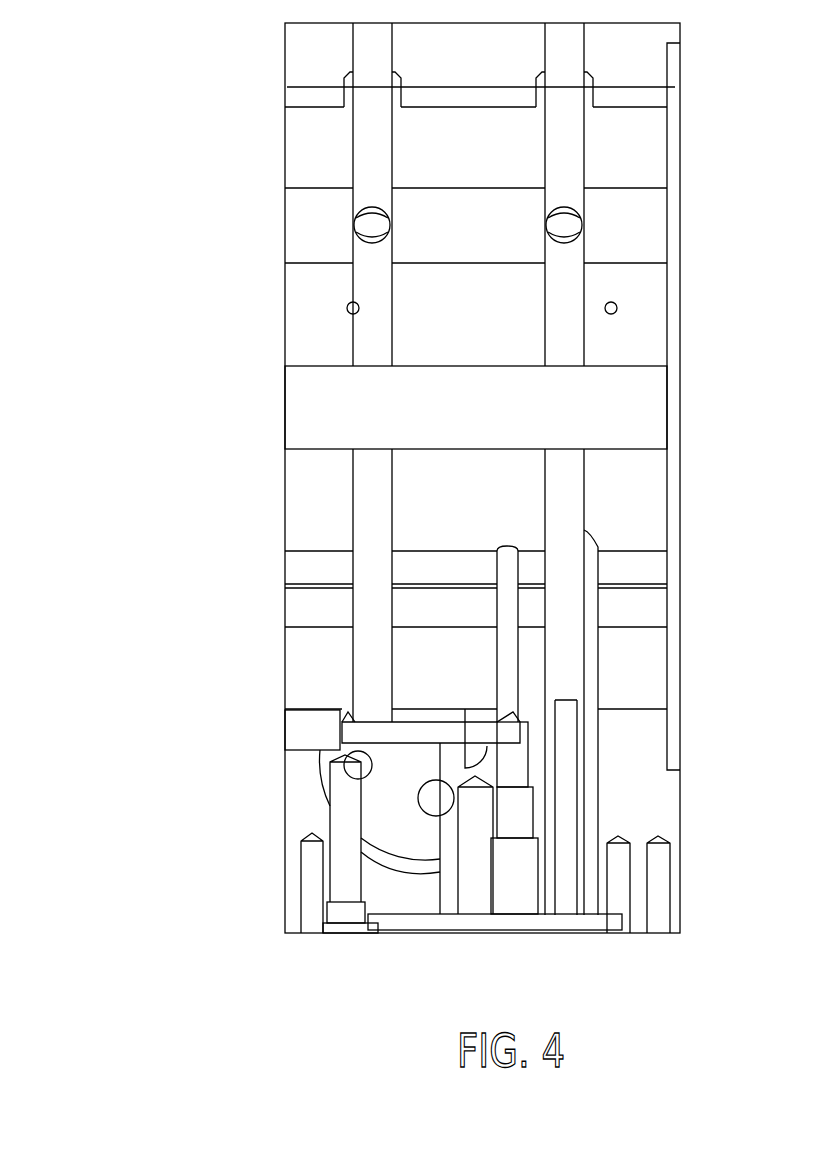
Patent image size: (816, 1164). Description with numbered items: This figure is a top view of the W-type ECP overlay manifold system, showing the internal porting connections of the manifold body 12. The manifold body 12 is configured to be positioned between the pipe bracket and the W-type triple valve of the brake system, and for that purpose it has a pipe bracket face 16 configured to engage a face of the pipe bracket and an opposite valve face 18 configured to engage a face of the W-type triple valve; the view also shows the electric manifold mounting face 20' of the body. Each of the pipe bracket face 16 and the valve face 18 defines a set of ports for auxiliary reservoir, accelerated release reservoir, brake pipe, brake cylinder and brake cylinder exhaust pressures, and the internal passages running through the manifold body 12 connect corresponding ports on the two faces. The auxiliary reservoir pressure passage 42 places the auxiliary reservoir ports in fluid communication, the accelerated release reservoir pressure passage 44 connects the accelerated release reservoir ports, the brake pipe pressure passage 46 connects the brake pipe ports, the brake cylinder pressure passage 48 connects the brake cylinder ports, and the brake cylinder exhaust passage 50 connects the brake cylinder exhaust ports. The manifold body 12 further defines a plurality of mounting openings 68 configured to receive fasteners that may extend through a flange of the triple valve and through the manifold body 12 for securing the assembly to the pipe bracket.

The manifold body 12 is at (108, 355).
The pipe bracket face 16 is at (285, 232).
The valve face 18 is at (680, 338).
The base plate 20' is at (518, 960).
The auxiliary reservoir pressure passage 42 is at (645, 315).
The accelerated release reservoir pressure passage 44 is at (440, 602).
The brake pipe pressure passage 46 is at (647, 568).
The brake cylinder pressure passage 48 is at (468, 853).
The brake cylinder exhaust passage 50 is at (368, 491).
The mounting openings 68 is at (645, 157).